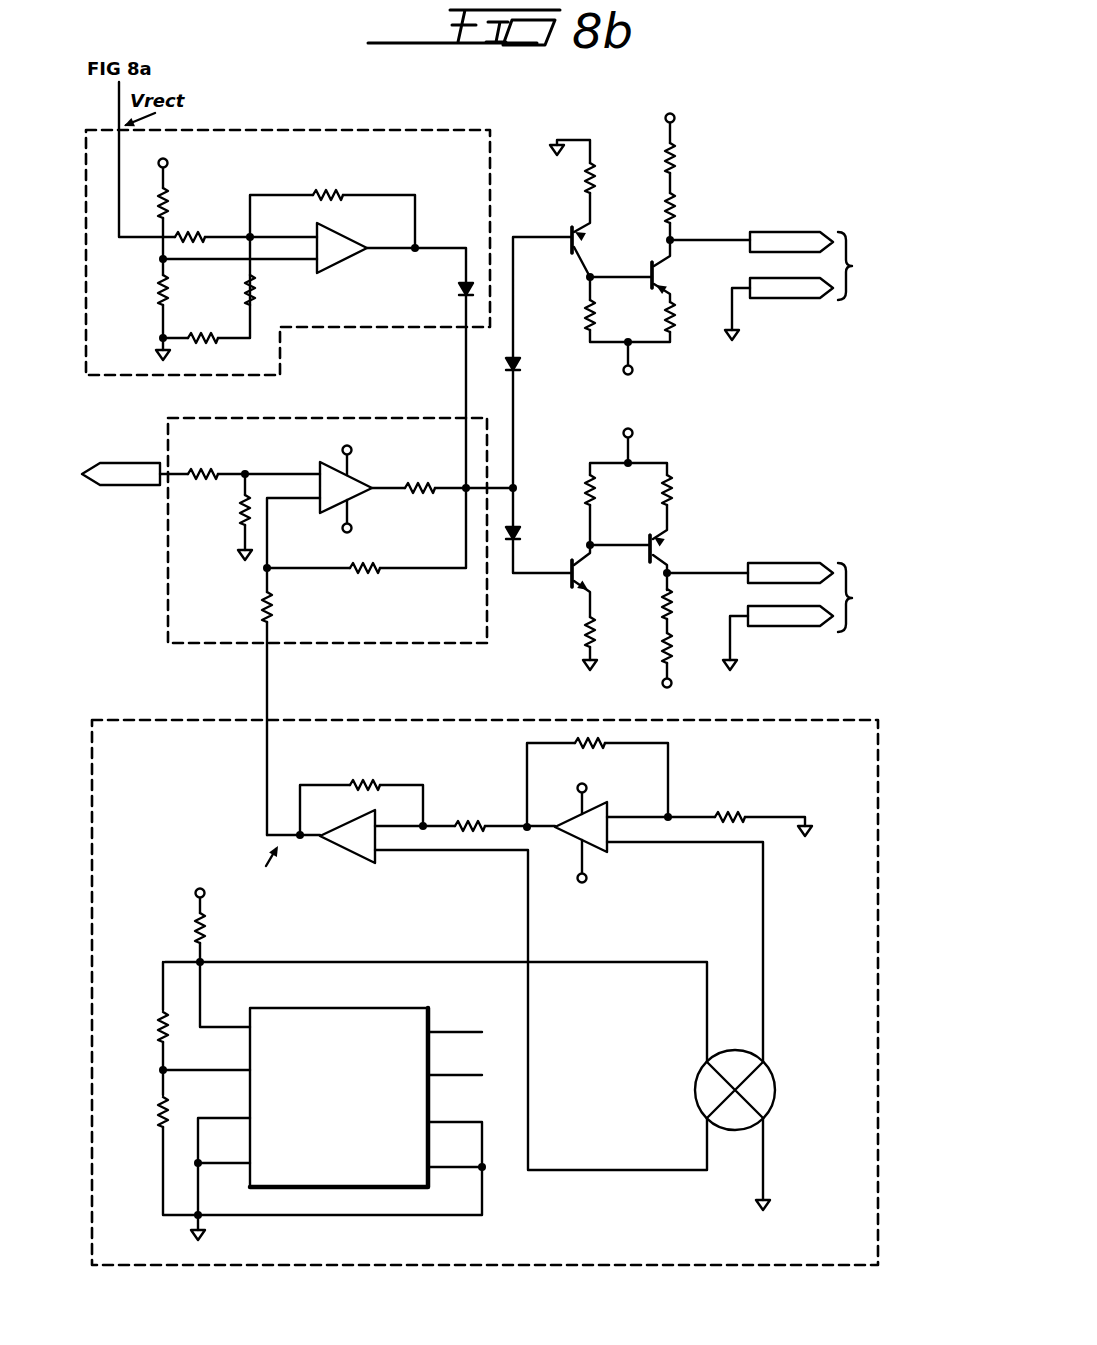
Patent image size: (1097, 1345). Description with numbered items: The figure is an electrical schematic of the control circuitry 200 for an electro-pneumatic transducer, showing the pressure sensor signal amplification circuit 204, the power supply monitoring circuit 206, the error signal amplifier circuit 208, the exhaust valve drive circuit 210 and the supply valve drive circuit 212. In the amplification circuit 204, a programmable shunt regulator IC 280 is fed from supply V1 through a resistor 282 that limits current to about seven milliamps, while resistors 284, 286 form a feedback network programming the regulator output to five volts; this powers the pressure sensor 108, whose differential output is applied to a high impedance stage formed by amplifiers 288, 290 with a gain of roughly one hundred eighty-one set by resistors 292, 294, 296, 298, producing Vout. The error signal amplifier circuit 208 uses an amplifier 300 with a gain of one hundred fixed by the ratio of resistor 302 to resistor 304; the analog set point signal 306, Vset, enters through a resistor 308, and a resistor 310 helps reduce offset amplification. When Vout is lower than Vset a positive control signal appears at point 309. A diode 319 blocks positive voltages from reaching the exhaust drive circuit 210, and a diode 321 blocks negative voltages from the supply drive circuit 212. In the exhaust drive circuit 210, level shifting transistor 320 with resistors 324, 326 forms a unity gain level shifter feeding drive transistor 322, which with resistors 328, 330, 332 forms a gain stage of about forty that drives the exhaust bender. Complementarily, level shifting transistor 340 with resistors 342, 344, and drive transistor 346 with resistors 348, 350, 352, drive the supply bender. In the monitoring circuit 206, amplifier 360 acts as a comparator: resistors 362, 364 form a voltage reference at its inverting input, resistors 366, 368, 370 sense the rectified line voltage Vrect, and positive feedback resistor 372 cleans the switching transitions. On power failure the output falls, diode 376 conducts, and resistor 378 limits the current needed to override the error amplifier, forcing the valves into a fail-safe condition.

The pressure sensor 108 is at (777, 1088).
The control circuitry 200 is at (290, 110).
The pressure sensor signal amplification circuit 204 is at (777, 721).
The power supply monitoring circuit 206 is at (492, 142).
The error signal amplifier circuit 208 is at (308, 417).
The exhaust valve drive circuit 210 is at (752, 158).
The supply valve drive circuit 212 is at (732, 506).
The programmable shunt regulator IC 280 is at (375, 1007).
The resistor 282 is at (210, 936).
The resistor 284 is at (158, 1030).
The resistor 286 is at (158, 1113).
The amplifier 288 is at (603, 860).
The amplifier 290 is at (356, 861).
The resistor 292 is at (750, 817).
The resistor 294 is at (604, 749).
The resistor 296 is at (470, 821).
The resistor 298 is at (369, 781).
The amplifier 300 is at (368, 479).
The resistor 302 is at (373, 562).
The resistor 304 is at (275, 610).
The analog set point signal 306 is at (118, 462).
The resistor 308 is at (214, 470).
The point 309 is at (524, 480).
The resistor 310 is at (241, 522).
The diode 319 is at (520, 366).
The level shifting transistor 320 is at (569, 232).
The diode 321 is at (521, 530).
The drive transistor 322 is at (664, 284).
The resistor 324 is at (598, 166).
The resistor 326 is at (583, 318).
The resistor 328 is at (678, 148).
The resistor 330 is at (678, 200).
The resistor 332 is at (663, 322).
The level shifting transistor 340 is at (570, 570).
The resistor 342 is at (598, 492).
The resistor 344 is at (583, 638).
The drive transistor 346 is at (666, 550).
The resistor 348 is at (676, 484).
The resistor 350 is at (660, 608).
The resistor 352 is at (660, 652).
The amplifier 360 is at (343, 233).
The resistor 362 is at (170, 200).
The resistor 364 is at (156, 293).
The resistor 366 is at (196, 232).
The resistor 368 is at (257, 289).
The resistor 370 is at (200, 332).
The positive feedback resistor 372 is at (332, 196).
The diode 376 is at (460, 291).
The resistor 378 is at (420, 482).